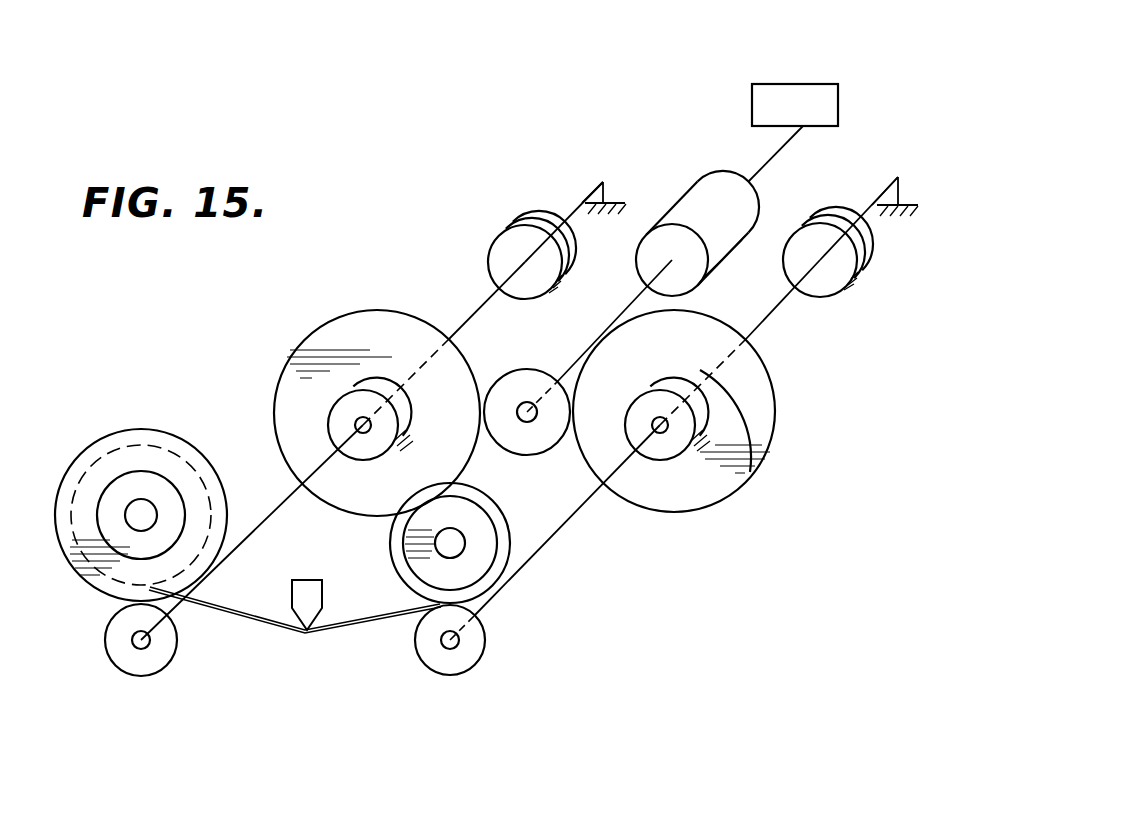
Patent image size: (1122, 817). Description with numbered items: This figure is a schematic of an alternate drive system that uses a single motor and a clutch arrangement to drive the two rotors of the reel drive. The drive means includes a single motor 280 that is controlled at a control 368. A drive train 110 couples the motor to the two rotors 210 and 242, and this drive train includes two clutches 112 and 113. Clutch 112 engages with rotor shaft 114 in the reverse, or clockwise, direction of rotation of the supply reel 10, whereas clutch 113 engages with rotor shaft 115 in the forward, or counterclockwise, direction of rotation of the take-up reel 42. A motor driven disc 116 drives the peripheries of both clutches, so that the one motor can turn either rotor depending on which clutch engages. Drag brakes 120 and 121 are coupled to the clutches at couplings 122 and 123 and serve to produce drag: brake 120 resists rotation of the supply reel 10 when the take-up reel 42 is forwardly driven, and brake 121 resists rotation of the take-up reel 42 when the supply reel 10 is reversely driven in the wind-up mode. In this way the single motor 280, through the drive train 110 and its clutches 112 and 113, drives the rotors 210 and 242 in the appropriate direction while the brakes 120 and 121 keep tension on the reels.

The supply reel 10 is at (88, 450).
The rotor 210 is at (125, 665).
The rotor shaft 114 is at (272, 510).
The clutch 112 is at (282, 378).
The coupling 122 is at (472, 316).
The drag brake 120 is at (497, 258).
The motor driven disc 116 is at (513, 384).
The motor 280 is at (695, 208).
The motor control 368 is at (795, 94).
The take-up reel 42 is at (503, 572).
The rotor 242 is at (467, 658).
The rotor shaft 115 is at (575, 516).
The drive train 110 is at (800, 415).
The clutch 113 is at (752, 470).
The coupling 123 is at (758, 318).
The drag brake 121 is at (834, 282).